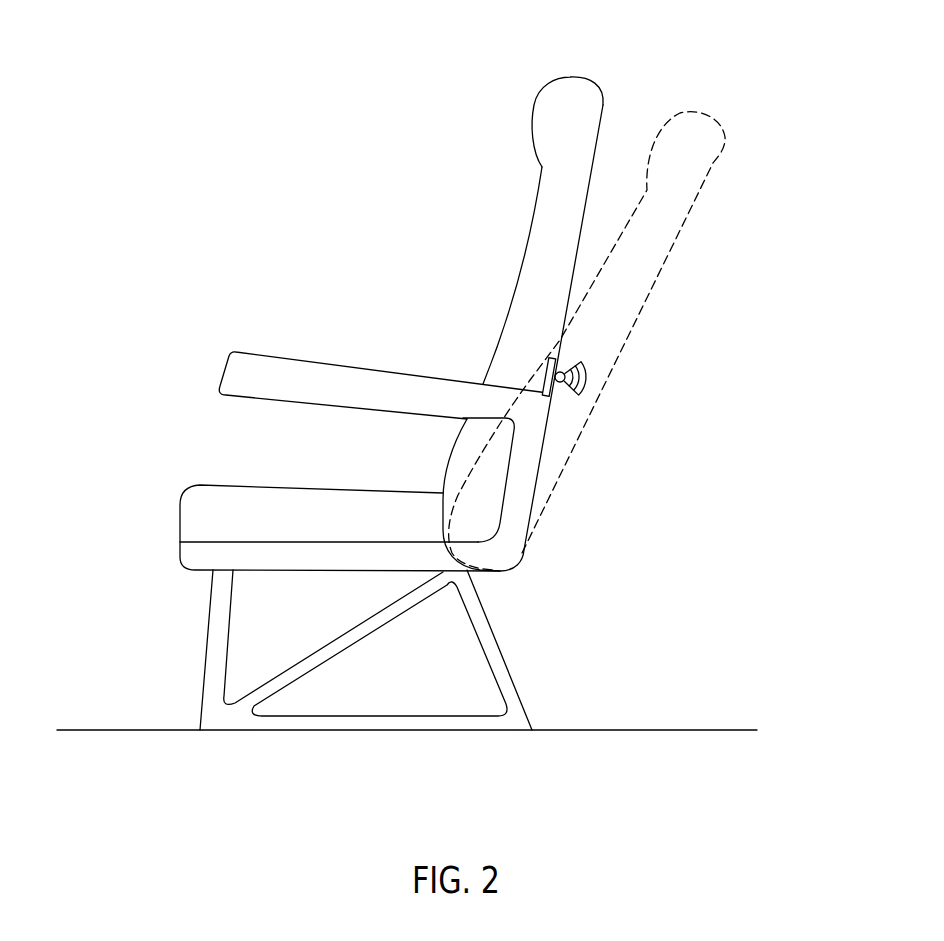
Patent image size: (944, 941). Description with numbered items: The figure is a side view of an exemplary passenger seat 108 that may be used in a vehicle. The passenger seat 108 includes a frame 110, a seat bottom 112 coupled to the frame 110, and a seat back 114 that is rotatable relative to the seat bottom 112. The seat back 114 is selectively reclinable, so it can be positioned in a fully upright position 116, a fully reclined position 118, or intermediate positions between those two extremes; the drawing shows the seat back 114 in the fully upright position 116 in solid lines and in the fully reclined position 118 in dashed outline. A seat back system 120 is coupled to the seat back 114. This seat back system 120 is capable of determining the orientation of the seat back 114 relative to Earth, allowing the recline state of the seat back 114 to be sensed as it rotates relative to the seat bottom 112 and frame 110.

The passenger seat 108 is at (218, 103).
The frame 110 is at (512, 678).
The seat bottom 112 is at (240, 486).
The seat back 114 is at (588, 77).
The fully upright position 116 is at (517, 103).
The fully reclined position 118 is at (742, 100).
The seat back system 120 is at (547, 382).